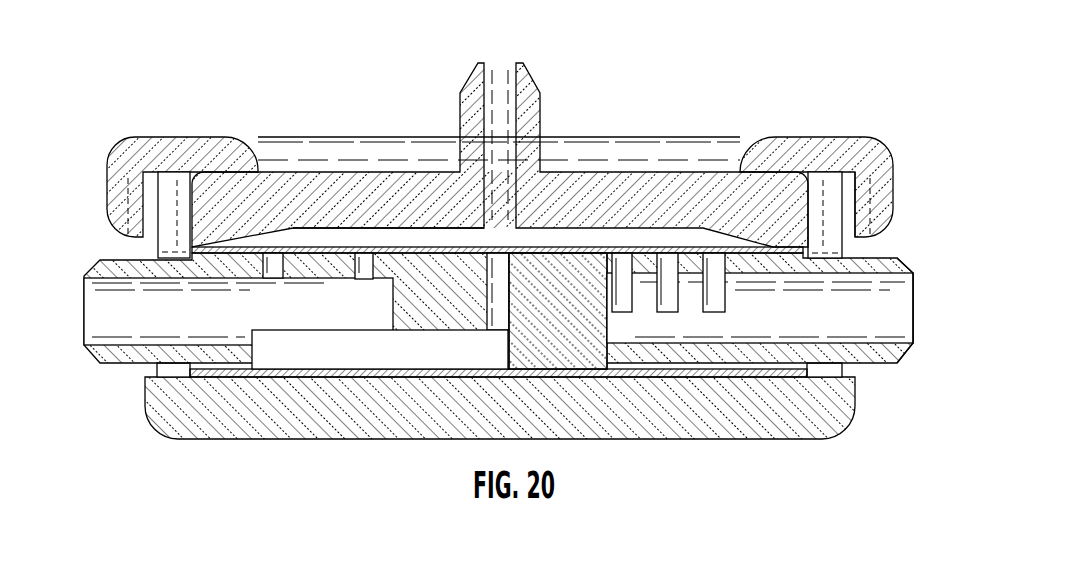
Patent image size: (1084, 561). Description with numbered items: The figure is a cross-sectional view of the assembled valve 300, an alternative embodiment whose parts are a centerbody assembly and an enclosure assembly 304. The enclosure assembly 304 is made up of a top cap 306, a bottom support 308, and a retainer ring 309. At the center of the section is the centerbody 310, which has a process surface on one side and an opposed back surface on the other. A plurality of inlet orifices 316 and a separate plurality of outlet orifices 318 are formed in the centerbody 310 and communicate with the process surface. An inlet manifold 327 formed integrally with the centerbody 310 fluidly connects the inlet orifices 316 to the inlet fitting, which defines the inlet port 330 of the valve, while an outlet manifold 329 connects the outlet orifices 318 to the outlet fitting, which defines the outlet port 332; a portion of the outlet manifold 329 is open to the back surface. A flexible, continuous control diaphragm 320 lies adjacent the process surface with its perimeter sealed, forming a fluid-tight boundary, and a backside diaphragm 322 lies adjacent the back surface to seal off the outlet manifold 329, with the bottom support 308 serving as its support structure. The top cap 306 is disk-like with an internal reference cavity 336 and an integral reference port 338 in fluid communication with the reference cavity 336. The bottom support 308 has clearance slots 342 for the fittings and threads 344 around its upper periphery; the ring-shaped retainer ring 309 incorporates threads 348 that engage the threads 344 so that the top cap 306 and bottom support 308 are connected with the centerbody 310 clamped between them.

The valve 300 is at (502, 264).
The enclosure assembly 304 is at (93, 214).
The top cap 306 is at (703, 185).
The bottom support 308 is at (757, 422).
The retainer ring 309 is at (802, 148).
The centerbody 310 is at (583, 338).
The inlet orifices 316 is at (710, 312).
The outlet orifices 318 is at (275, 268).
The control diaphragm 320 is at (313, 246).
The backside diaphragm 322 is at (368, 375).
The inlet manifold 327 is at (793, 324).
The outlet manifold 329 is at (347, 362).
The inlet port 330 is at (923, 325).
The outlet port 332 is at (72, 343).
The reference cavity 336 is at (420, 232).
The reference port 338 is at (528, 90).
The clearance slots 342 is at (828, 370).
The threads 344 is at (835, 244).
The threads 348 is at (862, 190).